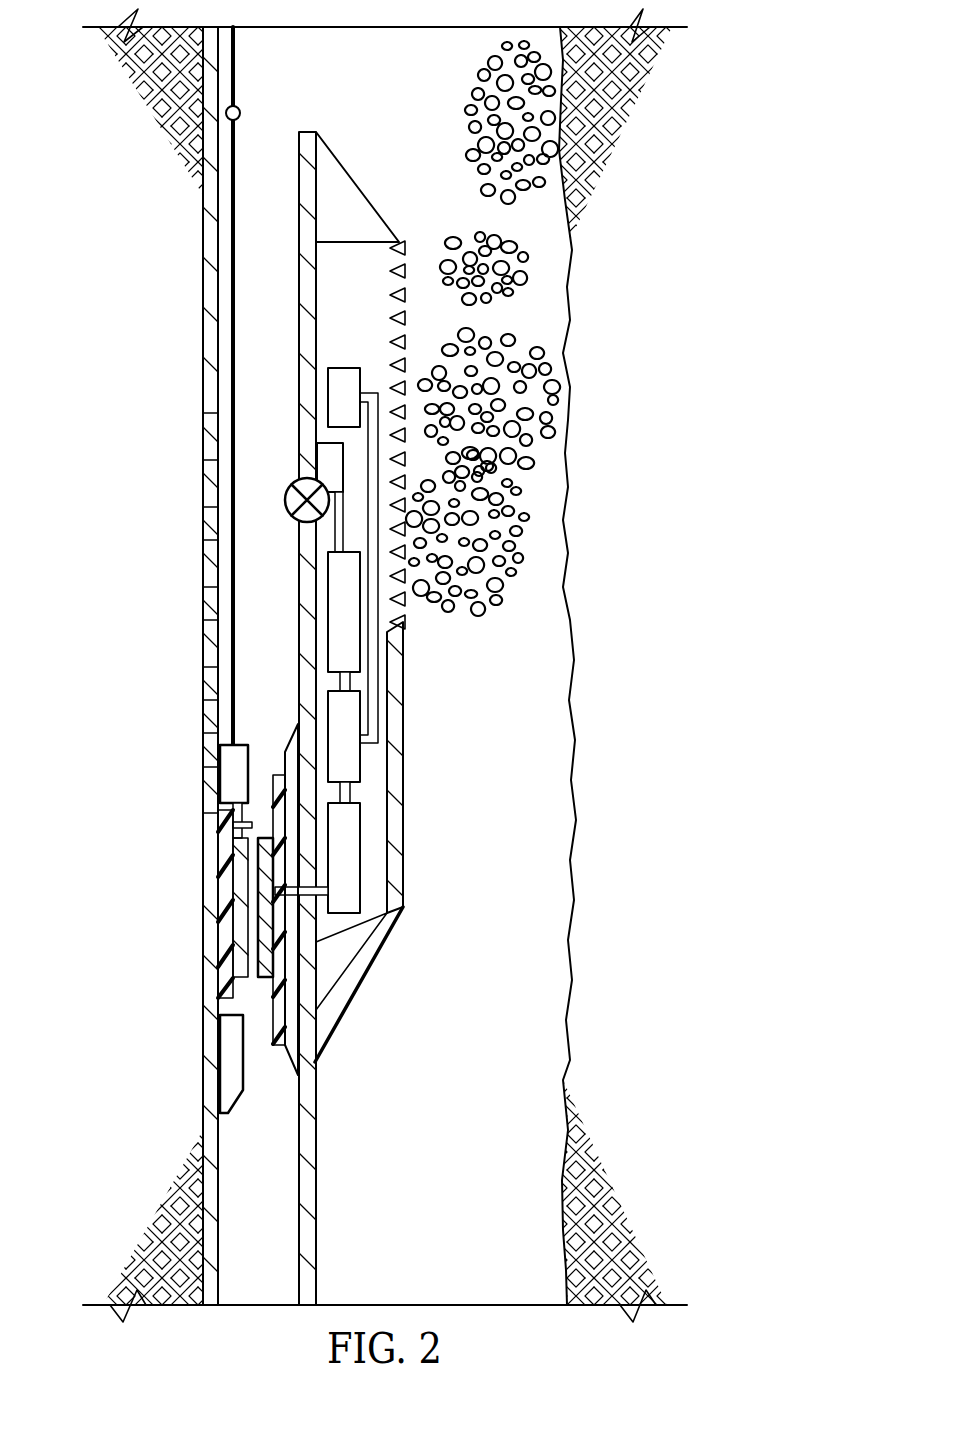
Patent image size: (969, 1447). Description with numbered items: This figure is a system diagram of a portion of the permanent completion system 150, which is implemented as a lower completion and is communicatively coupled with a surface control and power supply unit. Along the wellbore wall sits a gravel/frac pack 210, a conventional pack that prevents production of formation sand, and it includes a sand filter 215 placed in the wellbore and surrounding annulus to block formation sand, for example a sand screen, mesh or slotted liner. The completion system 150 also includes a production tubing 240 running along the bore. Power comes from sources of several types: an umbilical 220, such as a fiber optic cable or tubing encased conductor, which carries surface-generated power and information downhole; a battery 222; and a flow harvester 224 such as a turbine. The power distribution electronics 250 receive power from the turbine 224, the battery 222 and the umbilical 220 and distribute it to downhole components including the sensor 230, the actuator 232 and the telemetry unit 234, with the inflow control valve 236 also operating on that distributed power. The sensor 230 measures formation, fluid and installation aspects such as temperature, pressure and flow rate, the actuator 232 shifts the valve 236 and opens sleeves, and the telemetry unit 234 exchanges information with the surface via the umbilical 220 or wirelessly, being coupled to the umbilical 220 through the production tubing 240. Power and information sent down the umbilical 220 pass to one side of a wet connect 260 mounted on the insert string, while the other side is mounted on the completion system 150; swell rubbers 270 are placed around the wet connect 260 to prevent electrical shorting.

The completion system 150 is at (389, 149).
The gravel/frac pack 210 is at (541, 362).
The sand filter 215 is at (406, 270).
The umbilical 220 is at (241, 110).
The battery 222 is at (352, 858).
The flow harvester 224 is at (324, 460).
The sensor 230 is at (346, 368).
The actuator 232 is at (352, 647).
The telemetry unit 234 is at (228, 781).
The inflow control valve 236 is at (292, 508).
The production tubing 240 is at (205, 234).
The power distribution electronics 250 is at (352, 752).
The wet connect 260 is at (231, 927).
The swell rubbers 270 is at (250, 822).